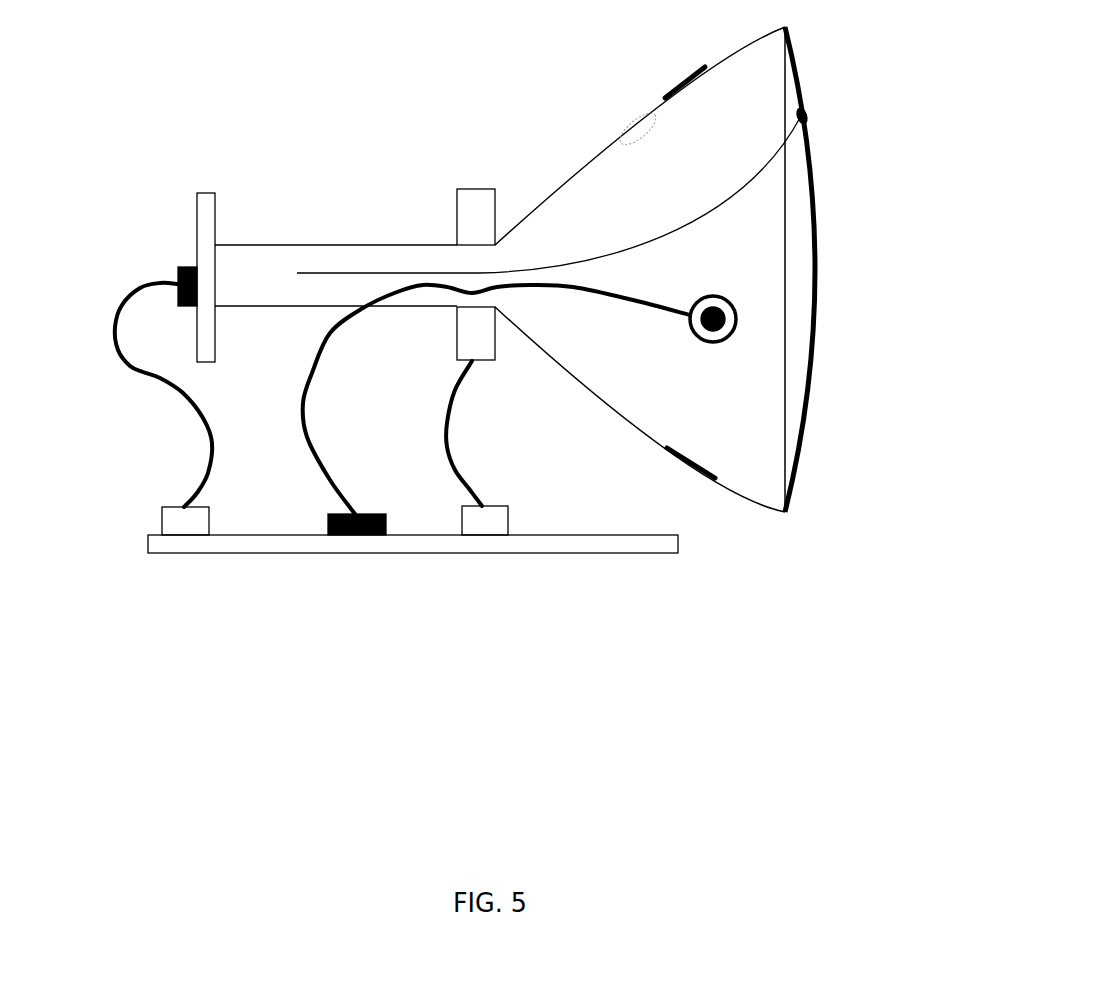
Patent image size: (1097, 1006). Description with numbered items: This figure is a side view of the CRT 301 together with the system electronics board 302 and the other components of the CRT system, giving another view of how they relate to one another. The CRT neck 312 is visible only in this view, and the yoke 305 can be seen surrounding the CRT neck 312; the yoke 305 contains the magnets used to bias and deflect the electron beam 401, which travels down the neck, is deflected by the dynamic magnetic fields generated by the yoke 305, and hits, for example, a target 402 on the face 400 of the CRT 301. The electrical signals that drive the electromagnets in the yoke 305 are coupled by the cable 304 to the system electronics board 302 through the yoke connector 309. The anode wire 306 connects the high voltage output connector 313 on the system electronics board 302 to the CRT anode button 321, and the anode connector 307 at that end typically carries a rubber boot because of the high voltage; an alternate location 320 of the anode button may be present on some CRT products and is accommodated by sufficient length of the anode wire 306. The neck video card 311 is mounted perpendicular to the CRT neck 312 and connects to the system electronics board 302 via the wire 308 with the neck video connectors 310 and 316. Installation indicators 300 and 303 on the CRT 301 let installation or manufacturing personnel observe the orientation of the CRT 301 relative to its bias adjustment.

The installation indicator 300 is at (680, 72).
The CRT 301 is at (578, 165).
The system electronics board 302 is at (563, 530).
The installation indicator 303 is at (696, 488).
The cable 304 is at (462, 398).
The yoke 305 is at (483, 183).
The anode wire 306 is at (598, 300).
The anode connector 307 is at (730, 295).
The wire 308 is at (110, 337).
The yoke connector 309 is at (455, 520).
The neck video connector 310 is at (212, 513).
The neck video card 311 is at (207, 183).
The CRT neck 312 is at (356, 235).
The high voltage output connector 313 is at (367, 515).
The neck video connector 316 is at (173, 273).
The alternate location of the CRT anode button 320 is at (638, 127).
The CRT anode button 321 is at (712, 335).
The CRT face 400 is at (815, 198).
The electron beam 401 is at (695, 215).
The target 402 is at (806, 110).